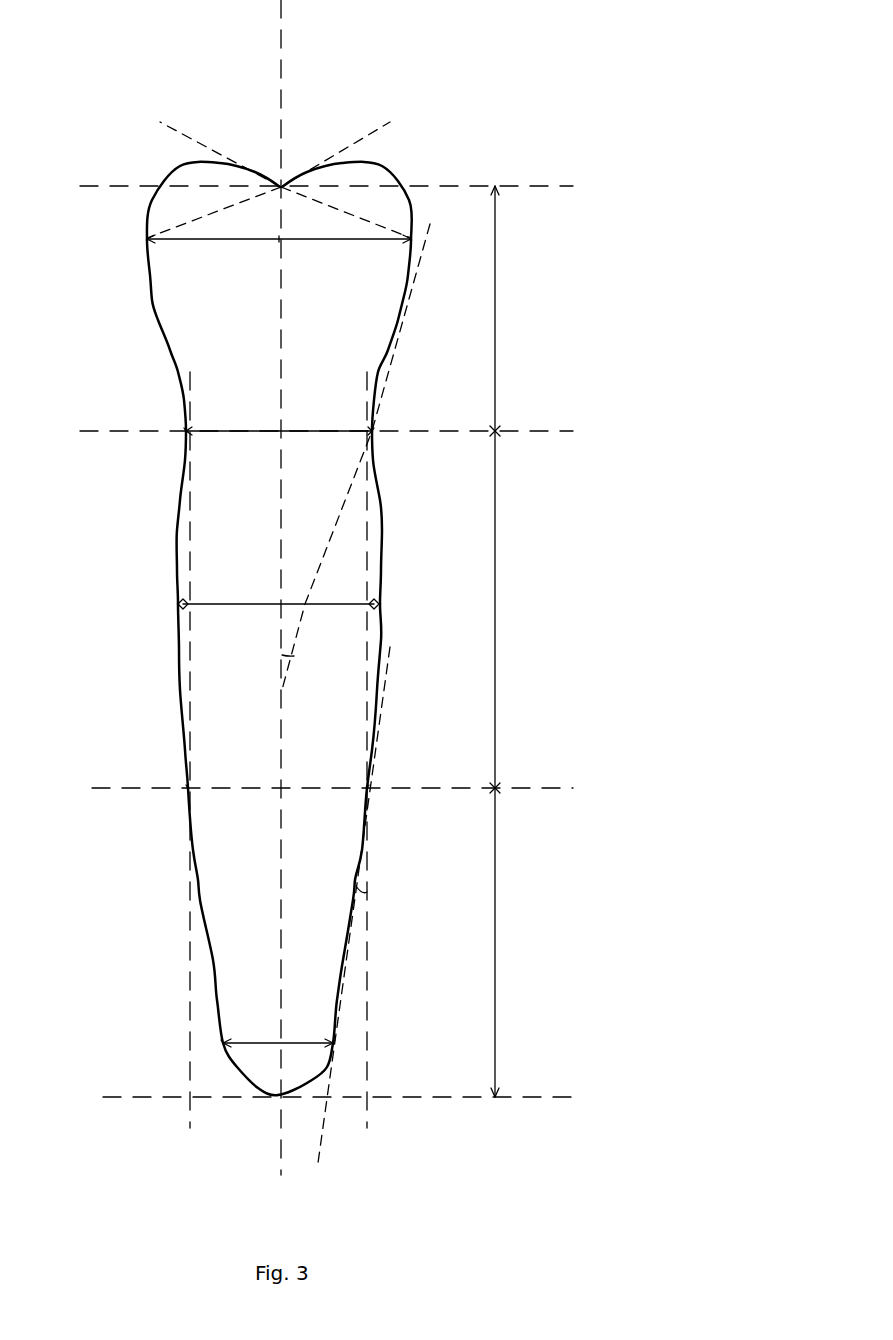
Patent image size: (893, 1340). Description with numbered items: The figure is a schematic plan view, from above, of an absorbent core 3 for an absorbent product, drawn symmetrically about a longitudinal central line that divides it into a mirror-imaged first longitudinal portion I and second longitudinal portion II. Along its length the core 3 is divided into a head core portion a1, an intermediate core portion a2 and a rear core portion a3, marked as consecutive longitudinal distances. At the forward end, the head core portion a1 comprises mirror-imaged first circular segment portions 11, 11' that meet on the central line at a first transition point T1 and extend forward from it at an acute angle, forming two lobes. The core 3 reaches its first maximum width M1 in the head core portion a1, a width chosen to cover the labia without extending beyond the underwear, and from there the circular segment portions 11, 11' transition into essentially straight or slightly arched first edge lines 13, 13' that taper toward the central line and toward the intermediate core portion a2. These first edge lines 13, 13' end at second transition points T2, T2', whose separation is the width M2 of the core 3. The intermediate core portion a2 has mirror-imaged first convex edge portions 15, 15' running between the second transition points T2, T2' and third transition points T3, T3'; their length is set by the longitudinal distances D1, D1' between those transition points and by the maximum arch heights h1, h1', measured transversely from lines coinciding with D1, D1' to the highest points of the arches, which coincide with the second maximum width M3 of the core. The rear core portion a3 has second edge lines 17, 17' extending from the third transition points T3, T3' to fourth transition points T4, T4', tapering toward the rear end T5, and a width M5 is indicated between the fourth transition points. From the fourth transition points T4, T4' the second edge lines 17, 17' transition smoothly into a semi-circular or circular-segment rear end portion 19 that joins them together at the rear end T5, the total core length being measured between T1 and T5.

The absorbent core 3 is at (490, 75).
The first longitudinal portion I is at (195, 80).
The second longitudinal portion II is at (357, 88).
The first circular segment portion 11 is at (361, 179).
The first circular segment portion 11' is at (180, 185).
The first edge line 13 is at (420, 335).
The first edge line 13' is at (122, 335).
The first convex edge portion 15 is at (412, 517).
The first convex edge portion 15' is at (137, 517).
The second edge line 17 is at (375, 915).
The second edge line 17' is at (194, 941).
The rear end portion 19 is at (307, 1083).
The first transition point T1 is at (284, 190).
The second transition point T2 is at (405, 403).
The second transition point T2' is at (138, 406).
The third transition point T3 is at (402, 760).
The third transition point T3' is at (141, 771).
The fourth transition point T4 is at (367, 1013).
The fourth transition point T4' is at (175, 1027).
The rear end T5 is at (278, 1098).
The first maximum width M1 is at (345, 242).
The width of the core at second transition points M2 is at (260, 433).
The second maximum width M3 is at (242, 606).
The midpoint of T4 width M5 is at (240, 1043).
The maximum height of the arch h1 is at (406, 579).
The maximum height of the arch h1' is at (139, 590).
The distance between second and third transition points D1 is at (403, 696).
The distance between second and third transition points D1' is at (144, 696).
The head core portion a1 is at (495, 306).
The intermediate core portion a2 is at (495, 594).
The rear core portion a3 is at (495, 930).